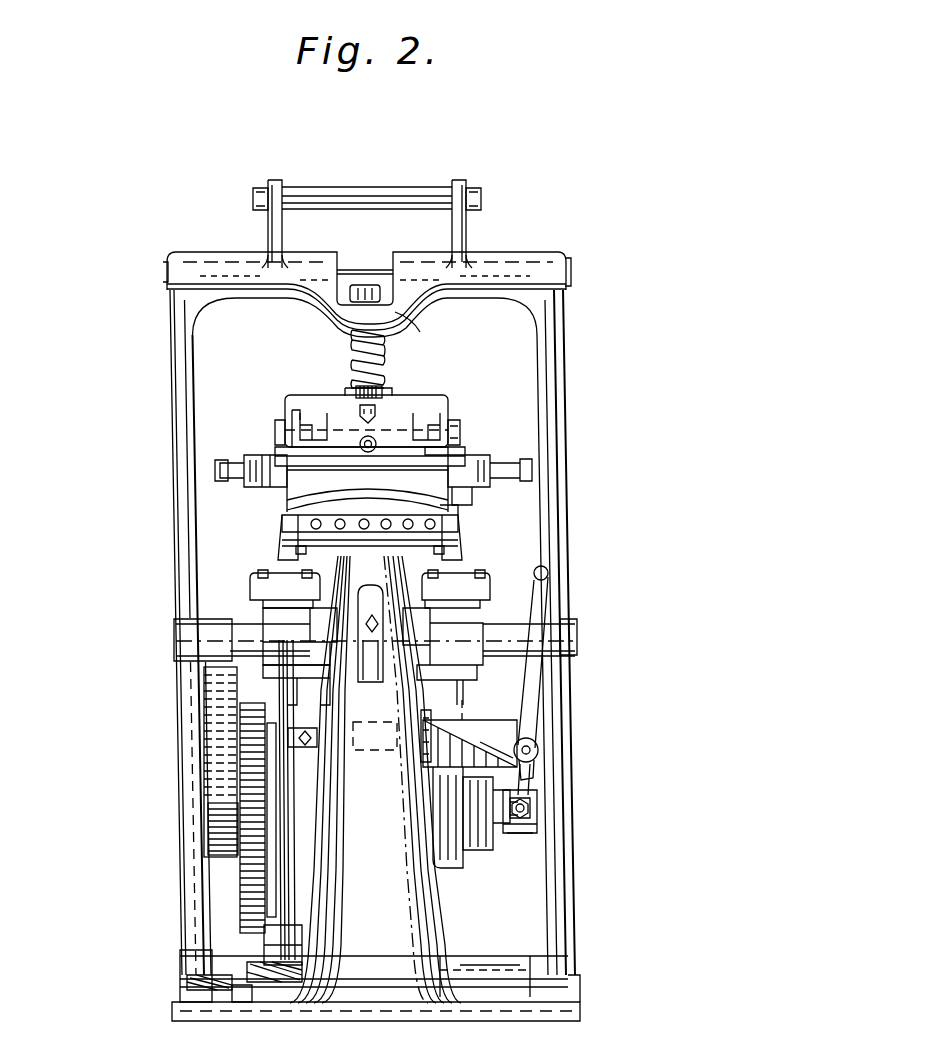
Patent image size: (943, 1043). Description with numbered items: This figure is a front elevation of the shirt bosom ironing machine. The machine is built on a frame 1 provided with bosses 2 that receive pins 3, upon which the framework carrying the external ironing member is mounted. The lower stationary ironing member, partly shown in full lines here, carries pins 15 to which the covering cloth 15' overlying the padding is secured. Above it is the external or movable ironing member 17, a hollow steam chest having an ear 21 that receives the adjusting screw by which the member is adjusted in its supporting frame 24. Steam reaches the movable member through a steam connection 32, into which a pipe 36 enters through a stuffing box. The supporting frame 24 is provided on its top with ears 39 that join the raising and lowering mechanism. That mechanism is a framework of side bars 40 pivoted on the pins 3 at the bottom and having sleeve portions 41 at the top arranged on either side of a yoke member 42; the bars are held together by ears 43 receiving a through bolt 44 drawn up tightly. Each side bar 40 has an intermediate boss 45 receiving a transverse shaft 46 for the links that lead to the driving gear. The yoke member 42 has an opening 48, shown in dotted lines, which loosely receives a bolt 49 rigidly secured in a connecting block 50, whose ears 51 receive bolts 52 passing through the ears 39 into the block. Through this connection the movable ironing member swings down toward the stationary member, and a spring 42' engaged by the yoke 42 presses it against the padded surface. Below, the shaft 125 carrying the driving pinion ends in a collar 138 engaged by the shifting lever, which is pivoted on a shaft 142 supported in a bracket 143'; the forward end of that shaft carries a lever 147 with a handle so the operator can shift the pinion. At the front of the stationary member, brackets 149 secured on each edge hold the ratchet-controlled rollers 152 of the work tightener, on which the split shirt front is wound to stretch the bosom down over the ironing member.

The frame 1 is at (348, 898).
The bosses 2 is at (494, 960).
The pins 3 is at (584, 985).
The pins 15 is at (390, 538).
The covering cloth 15' is at (472, 498).
The external or movable ironing member 17 is at (305, 478).
The ear 21 is at (362, 440).
The supporting frame 24 is at (282, 456).
The steam connection 32 is at (248, 458).
The pipe 36 is at (510, 466).
The ears 39 is at (298, 412).
The side bars 40 is at (565, 517).
The sleeve portions 41 is at (512, 252).
The yoke member 42 is at (357, 317).
The spring 42' is at (340, 364).
The ears 43 is at (268, 232).
The through bolt 44 is at (350, 196).
The boss 45 is at (556, 628).
The transverse shaft 46 is at (580, 640).
The opening 48 is at (425, 334).
The bolt 49 is at (366, 292).
The connecting block 50 is at (420, 400).
The ears 51 is at (446, 428).
The bolts 52 is at (460, 436).
The shaft 125 is at (496, 826).
The collar 138 is at (533, 800).
The shaft 142 is at (537, 752).
The bracket 143' is at (560, 735).
The lever 147 is at (535, 687).
The brackets 149 is at (445, 530).
The roller 152 is at (402, 540).